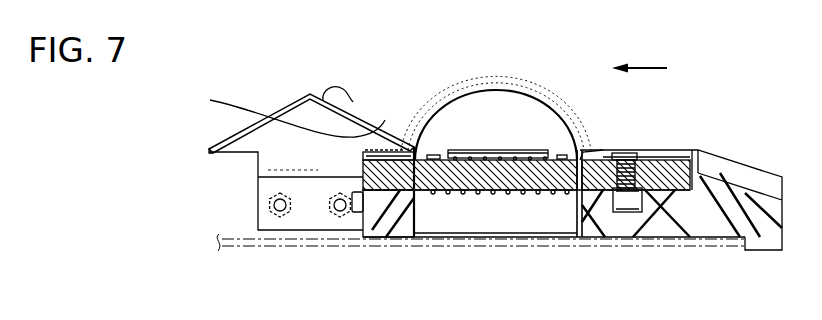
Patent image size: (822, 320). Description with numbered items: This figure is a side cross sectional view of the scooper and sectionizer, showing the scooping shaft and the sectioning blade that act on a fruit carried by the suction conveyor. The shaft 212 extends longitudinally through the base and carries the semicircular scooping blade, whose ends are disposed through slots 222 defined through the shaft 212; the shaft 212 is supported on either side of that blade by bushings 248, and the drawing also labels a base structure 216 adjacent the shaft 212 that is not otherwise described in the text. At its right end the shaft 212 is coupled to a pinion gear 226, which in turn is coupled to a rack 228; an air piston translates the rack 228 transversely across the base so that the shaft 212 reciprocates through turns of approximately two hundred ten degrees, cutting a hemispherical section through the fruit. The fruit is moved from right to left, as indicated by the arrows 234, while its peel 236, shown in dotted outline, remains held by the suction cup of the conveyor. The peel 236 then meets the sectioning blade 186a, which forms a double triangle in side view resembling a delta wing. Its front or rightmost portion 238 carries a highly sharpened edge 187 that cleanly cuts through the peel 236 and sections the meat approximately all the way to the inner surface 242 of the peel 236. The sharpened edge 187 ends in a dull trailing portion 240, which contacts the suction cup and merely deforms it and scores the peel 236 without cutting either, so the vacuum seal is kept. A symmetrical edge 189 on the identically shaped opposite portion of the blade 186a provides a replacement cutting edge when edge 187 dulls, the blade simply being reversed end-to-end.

The sectioning blade 186a is at (282, 108).
The sharpened edge 187 is at (210, 100).
The symmetrical edge 189 is at (235, 152).
The dull trailing edge portion 240 is at (347, 88).
The front portion 238 is at (395, 105).
The inner surface of peel 242 is at (508, 83).
The peel 236 is at (575, 117).
The arrows 234 is at (658, 62).
The shaft 212 is at (463, 153).
The side walls 216 is at (414, 195).
The slots 222 is at (420, 195).
The pinion gear 226 is at (637, 149).
The bushings 248 is at (603, 152).
The rack 228 is at (630, 228).